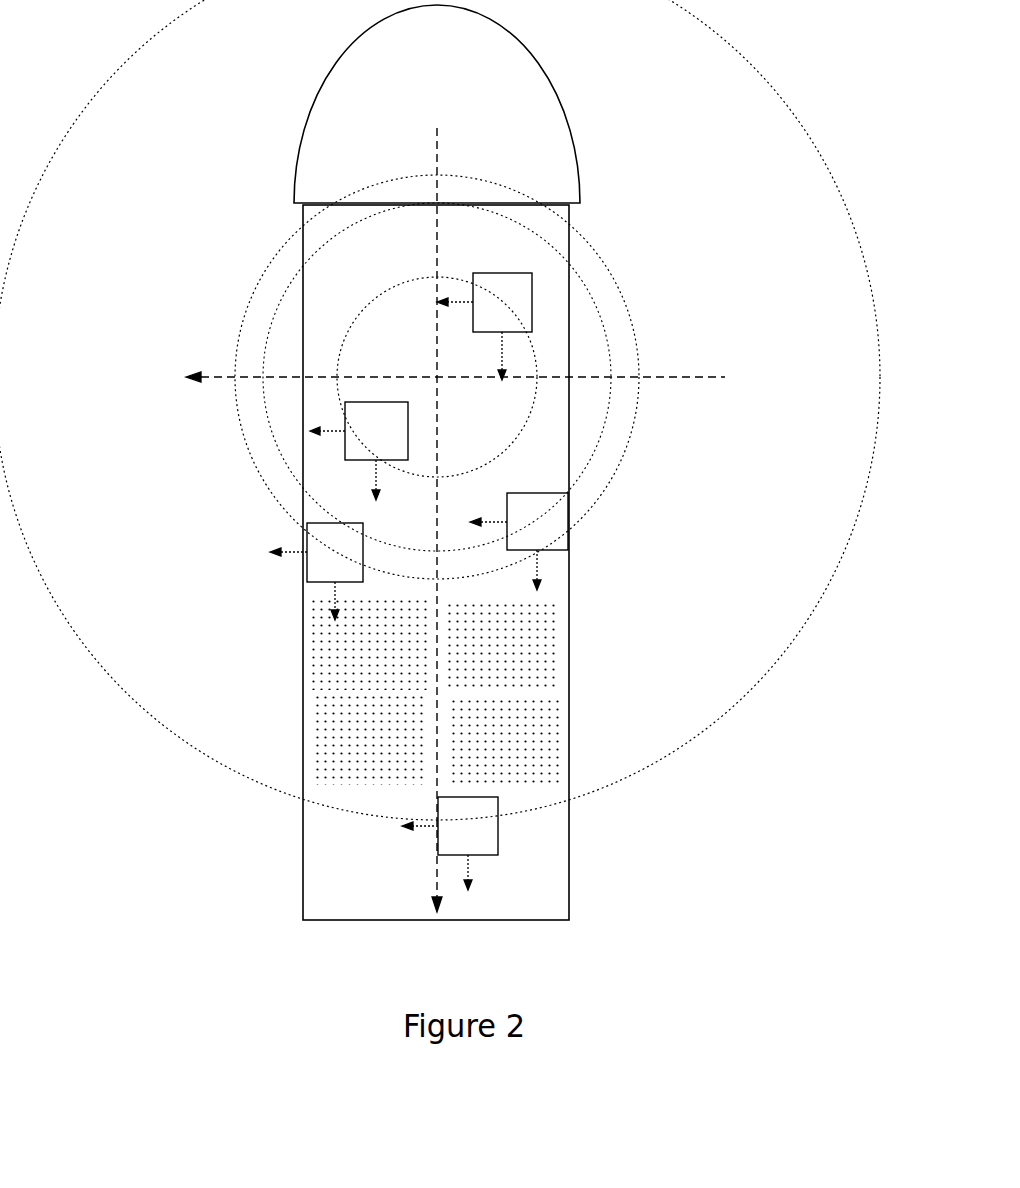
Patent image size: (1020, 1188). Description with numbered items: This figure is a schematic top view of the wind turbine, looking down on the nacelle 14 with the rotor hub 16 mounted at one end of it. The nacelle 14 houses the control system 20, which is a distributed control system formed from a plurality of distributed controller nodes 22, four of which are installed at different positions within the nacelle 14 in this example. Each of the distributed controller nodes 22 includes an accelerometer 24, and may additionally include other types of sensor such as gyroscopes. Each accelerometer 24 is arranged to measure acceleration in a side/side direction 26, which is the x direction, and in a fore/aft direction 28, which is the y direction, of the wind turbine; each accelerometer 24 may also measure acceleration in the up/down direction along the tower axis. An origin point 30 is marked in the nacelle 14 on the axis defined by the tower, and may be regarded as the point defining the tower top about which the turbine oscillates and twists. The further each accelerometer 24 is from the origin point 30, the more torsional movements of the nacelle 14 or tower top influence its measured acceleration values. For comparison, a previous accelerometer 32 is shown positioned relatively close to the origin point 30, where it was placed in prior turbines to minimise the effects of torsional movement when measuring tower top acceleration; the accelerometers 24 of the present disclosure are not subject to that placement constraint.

The nacelle 14 is at (303, 728).
The rotor hub 16 is at (295, 183).
The control system 20 is at (468, 603).
The distributed controller node 22 is at (468, 603).
The accelerometer 24 is at (507, 303).
The side/side direction 26 is at (265, 377).
The fore/aft direction 28 is at (437, 152).
The origin point 30 is at (440, 378).
The previous accelerometer 32 is at (345, 460).